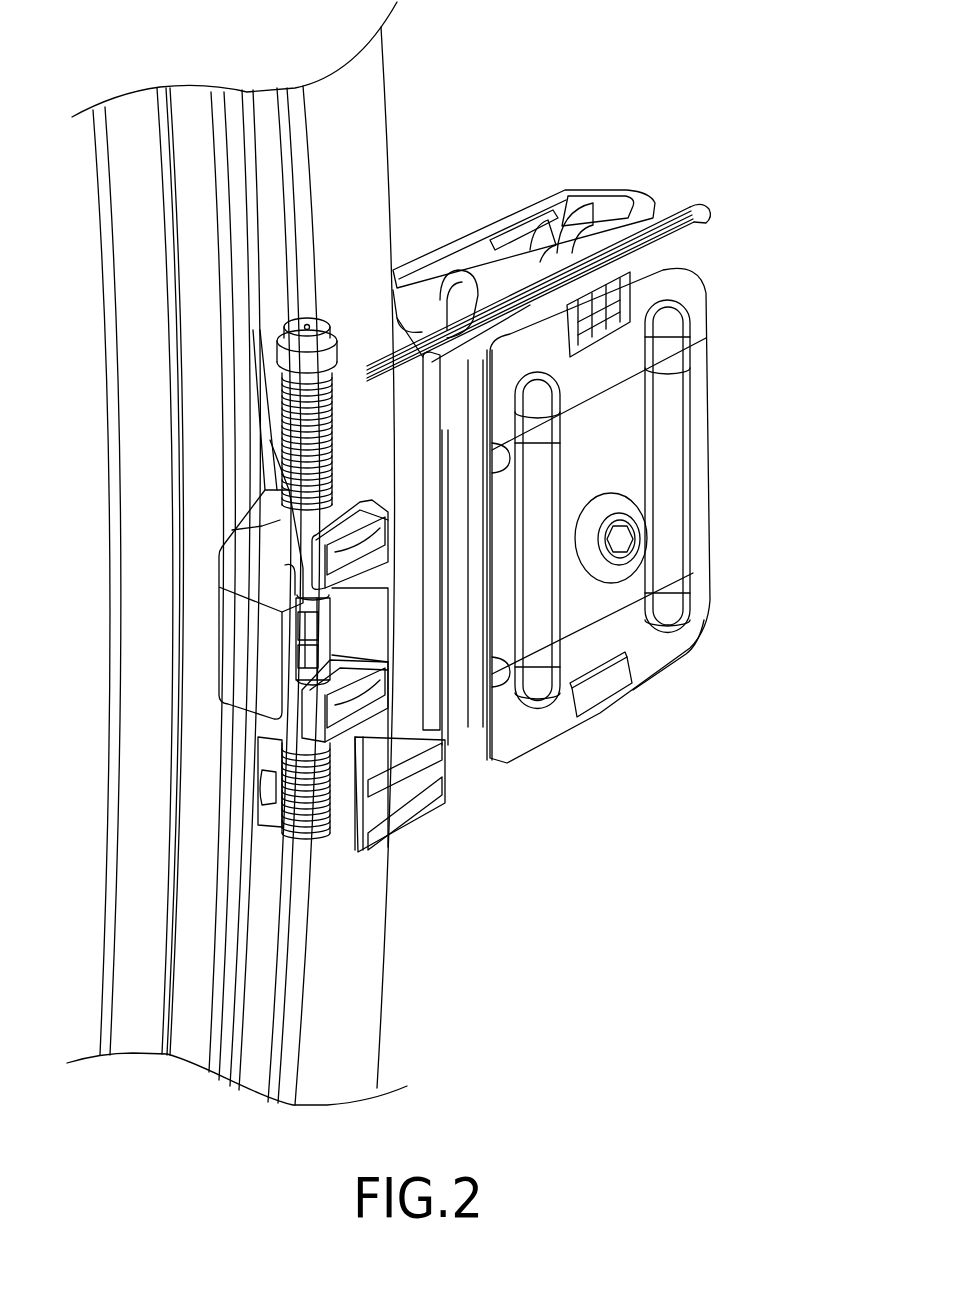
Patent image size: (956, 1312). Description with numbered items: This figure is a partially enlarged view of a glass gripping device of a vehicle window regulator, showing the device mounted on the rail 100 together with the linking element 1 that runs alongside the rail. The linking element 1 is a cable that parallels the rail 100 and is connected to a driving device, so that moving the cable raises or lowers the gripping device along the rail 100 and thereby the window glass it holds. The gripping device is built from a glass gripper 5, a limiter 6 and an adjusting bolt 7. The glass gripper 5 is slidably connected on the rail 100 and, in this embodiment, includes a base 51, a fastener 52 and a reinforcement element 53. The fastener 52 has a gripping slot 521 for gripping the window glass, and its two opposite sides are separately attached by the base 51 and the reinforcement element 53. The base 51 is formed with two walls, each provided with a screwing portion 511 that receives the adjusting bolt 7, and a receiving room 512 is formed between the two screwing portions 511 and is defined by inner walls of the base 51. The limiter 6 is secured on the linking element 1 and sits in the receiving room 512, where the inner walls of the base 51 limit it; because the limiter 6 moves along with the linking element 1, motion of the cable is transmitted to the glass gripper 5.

The linking element 1 is at (252, 142).
The rail 100 is at (380, 978).
The adjusting bolt 7 is at (323, 312).
The glass gripper 5 is at (787, 145).
The base 51 is at (638, 195).
The screwing portion 511 is at (287, 482).
The receiving room 512 is at (355, 635).
The fastener 52 is at (700, 212).
The gripping slot 521 is at (547, 280).
The reinforcement element 53 is at (710, 340).
The limiter 6 is at (378, 660).